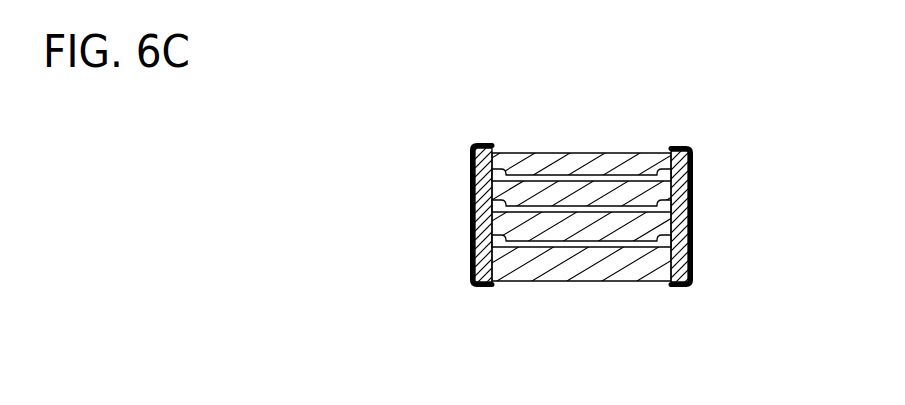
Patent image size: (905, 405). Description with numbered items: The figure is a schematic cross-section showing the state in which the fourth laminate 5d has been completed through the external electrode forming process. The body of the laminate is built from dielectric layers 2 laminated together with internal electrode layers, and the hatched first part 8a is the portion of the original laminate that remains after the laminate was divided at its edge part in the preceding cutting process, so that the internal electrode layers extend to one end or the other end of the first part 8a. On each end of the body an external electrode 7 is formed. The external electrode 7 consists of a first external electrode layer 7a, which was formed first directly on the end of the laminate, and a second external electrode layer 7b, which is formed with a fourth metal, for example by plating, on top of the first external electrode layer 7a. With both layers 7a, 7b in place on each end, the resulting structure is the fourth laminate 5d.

The fourth laminate 5d is at (775, 103).
The dielectric layers 2 is at (513, 273).
The first part 8a is at (650, 157).
The external electrode 7 is at (406, 144).
The first external electrode layer 7a is at (472, 145).
The second external electrode layer 7b is at (470, 205).